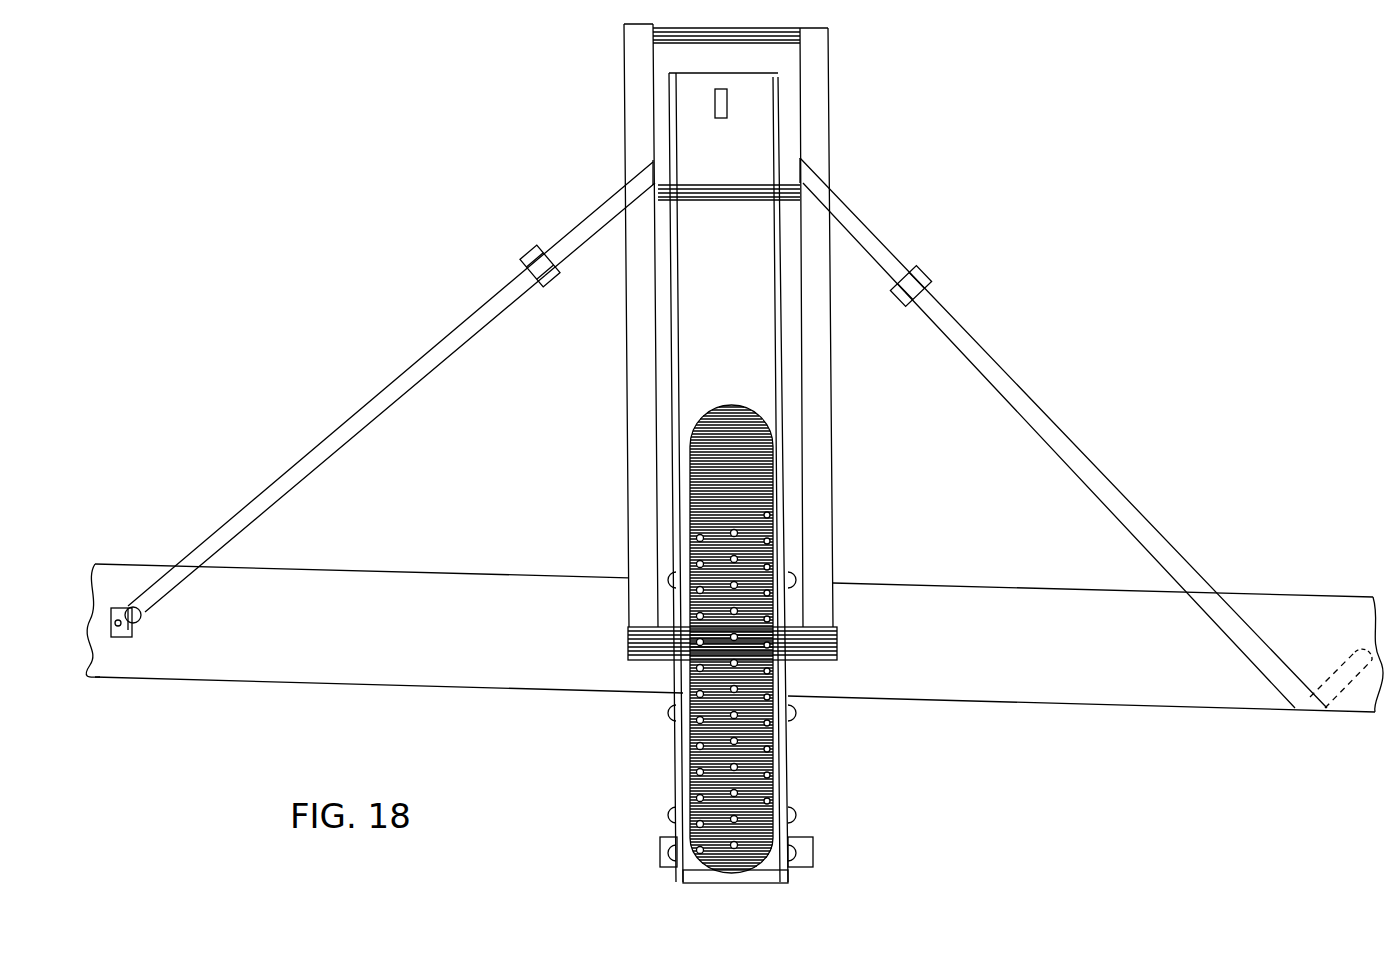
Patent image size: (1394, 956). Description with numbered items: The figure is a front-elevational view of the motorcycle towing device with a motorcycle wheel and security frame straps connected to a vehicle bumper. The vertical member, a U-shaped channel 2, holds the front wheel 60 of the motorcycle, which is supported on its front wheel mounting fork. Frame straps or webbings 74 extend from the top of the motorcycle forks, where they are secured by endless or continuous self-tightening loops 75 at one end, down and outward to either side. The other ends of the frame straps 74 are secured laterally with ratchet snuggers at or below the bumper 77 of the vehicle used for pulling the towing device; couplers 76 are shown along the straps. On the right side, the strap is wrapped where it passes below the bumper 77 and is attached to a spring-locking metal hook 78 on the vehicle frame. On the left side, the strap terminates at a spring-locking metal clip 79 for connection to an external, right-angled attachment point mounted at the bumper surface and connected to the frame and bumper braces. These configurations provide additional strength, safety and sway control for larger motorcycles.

The U-shaped channel 2 is at (760, 142).
The front wheel 60 is at (697, 758).
The frame straps 74 is at (353, 423).
The self-tightening loops 75 is at (590, 222).
The strut coupler 76 is at (548, 288).
The bumper 77 is at (990, 690).
The spring-locking metal hook 78 is at (1365, 660).
The spring-locking metal clip 79 is at (134, 616).